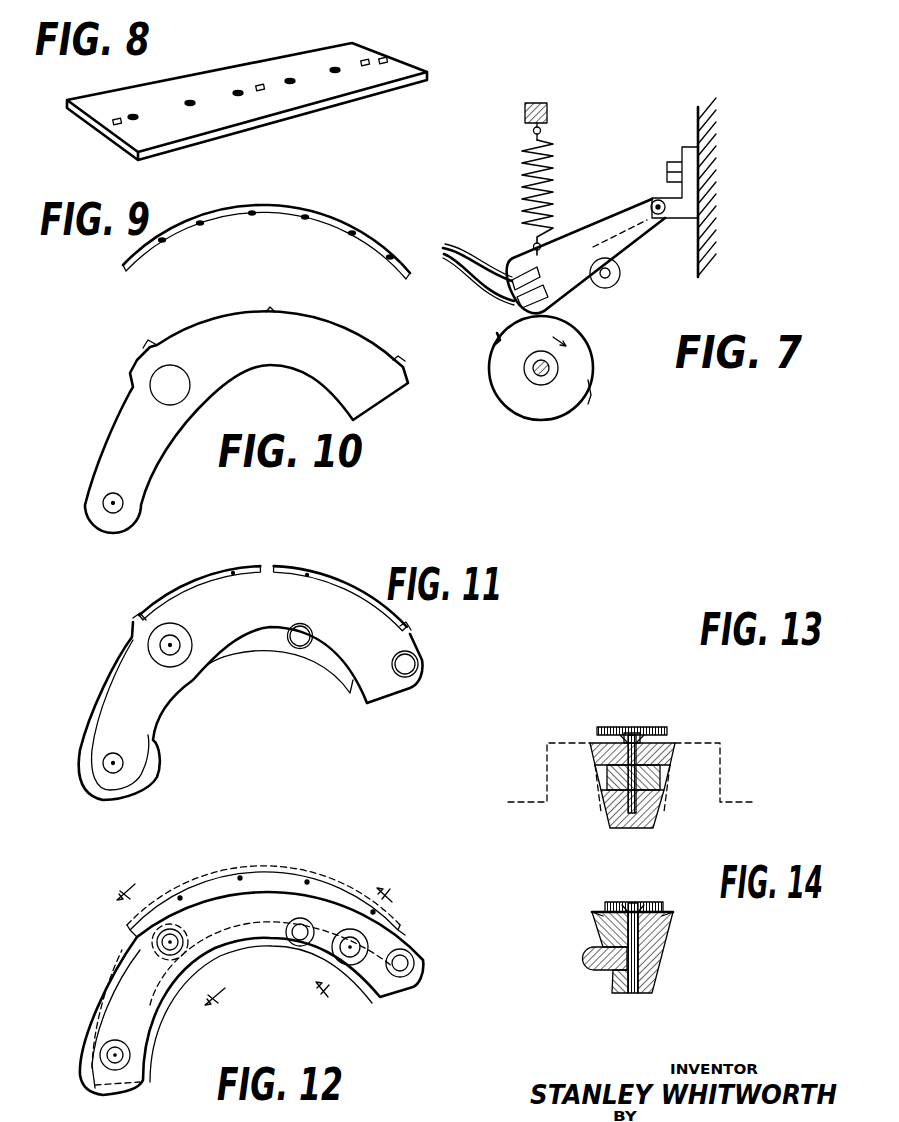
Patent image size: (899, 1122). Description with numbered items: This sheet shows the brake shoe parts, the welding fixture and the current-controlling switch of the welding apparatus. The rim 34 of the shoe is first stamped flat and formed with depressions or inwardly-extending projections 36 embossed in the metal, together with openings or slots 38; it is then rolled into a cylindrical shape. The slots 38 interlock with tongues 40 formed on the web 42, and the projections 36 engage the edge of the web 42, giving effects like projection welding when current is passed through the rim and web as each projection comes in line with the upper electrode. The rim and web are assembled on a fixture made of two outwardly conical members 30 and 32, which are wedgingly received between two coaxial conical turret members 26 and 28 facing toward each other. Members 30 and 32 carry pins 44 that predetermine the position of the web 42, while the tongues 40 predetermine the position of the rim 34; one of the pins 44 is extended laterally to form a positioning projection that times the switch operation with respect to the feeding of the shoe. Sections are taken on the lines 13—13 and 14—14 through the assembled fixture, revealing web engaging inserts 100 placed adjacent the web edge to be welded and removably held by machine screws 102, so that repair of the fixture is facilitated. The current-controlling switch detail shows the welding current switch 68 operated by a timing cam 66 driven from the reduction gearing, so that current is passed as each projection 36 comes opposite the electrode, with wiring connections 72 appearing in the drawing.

In FIG. 12, the section line 13— 13 is at (181, 940).
In FIG. 12, the section line 14— 14 is at (365, 950).
In FIG. 13, the conical member 26 is at (727, 757).
In FIG. 13, the conical member 28 is at (560, 763).
In FIG. 12, the outwardly conical member 30 is at (267, 925).
In FIG. 13, the outwardly conical member 30 is at (660, 743).
In FIG. 14, the outwardly conical member 30 is at (670, 950).
In FIG. 11, the outwardly conical member 32 is at (255, 640).
In FIG. 13, the outwardly conical member 32 is at (602, 753).
In FIG. 14, the outwardly conical member 32 is at (600, 938).
In FIG. 8, the rim 34 is at (345, 88).
In FIG. 9, the rim 34 is at (333, 213).
In FIG. 11, the rim 34 is at (307, 575).
In FIG. 12, the rim 34 is at (222, 868).
In FIG. 13, the rim 34 is at (613, 728).
In FIG. 14, the rim 34 is at (607, 907).
In FIG. 8, the inwardly-extending projections 36 is at (135, 116).
In FIG. 9, the inwardly-extending projections 36 is at (163, 242).
In FIG. 11, the inwardly-extending projections 36 is at (233, 573).
In FIG. 8, the slots 38 is at (261, 86).
In FIG. 10, the tongues 40 is at (150, 344).
In FIG. 11, the tongues 40 is at (157, 613).
In FIG. 10, the web 42 is at (270, 350).
In FIG. 11, the web 42 is at (217, 617).
In FIG. 12, the web 42 is at (330, 878).
In FIG. 13, the web 42 is at (613, 810).
In FIG. 14, the web 42 is at (617, 977).
In FIG. 11, the pins 44 is at (172, 648).
In FIG. 12, the pins 44 is at (160, 942).
In FIG. 13, the pins 44 is at (610, 777).
In FIG. 14, the pins 44 is at (593, 972).
In FIG. 7, the timing cam 66 is at (558, 390).
In FIG. 7, the welding current switch 68 is at (588, 267).
In FIG. 7, the wiring connections 72 is at (490, 283).
In FIG. 13, the web engaging inserts 100 is at (631, 735).
In FIG. 14, the web engaging inserts 100 is at (627, 905).
In FIG. 14, the machine screws 102 is at (657, 912).